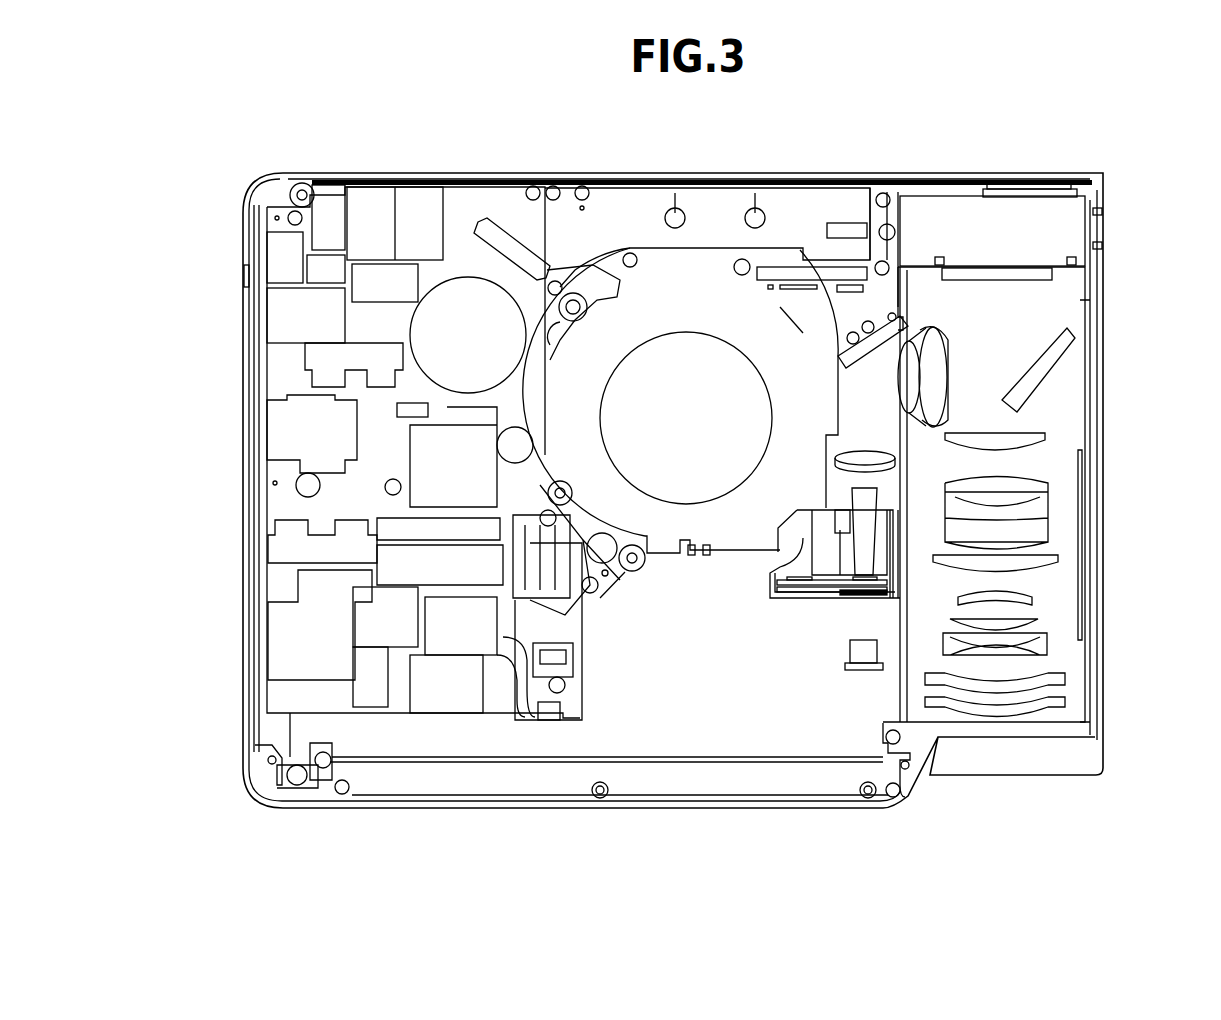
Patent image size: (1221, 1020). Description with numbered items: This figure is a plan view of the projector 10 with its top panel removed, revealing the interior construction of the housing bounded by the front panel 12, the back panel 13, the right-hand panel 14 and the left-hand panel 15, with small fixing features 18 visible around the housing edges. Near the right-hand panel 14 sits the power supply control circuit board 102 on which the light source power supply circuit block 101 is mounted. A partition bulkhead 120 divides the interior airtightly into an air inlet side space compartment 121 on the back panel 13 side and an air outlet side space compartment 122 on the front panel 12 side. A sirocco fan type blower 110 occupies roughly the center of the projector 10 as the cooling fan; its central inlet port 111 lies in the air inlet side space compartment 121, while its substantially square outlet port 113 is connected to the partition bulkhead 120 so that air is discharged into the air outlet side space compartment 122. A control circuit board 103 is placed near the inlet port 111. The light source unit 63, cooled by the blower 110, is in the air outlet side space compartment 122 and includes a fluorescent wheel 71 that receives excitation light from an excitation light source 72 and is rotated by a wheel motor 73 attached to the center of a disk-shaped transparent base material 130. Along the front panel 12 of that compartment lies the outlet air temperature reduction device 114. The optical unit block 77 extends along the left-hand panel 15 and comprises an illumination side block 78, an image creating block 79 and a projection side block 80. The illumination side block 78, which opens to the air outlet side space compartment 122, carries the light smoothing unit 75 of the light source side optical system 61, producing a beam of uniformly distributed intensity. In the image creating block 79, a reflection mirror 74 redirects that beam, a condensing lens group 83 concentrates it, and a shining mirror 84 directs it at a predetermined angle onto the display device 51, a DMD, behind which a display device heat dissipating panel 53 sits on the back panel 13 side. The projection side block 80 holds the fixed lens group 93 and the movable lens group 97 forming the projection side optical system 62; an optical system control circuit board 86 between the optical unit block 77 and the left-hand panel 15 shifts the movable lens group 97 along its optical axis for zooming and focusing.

The projector 10 is at (1116, 176).
The front panel 12 is at (606, 810).
The back panel 13 is at (462, 178).
The right-hand panel 14 is at (250, 536).
The left-hand panel 15 is at (1104, 306).
The fixing member 18 is at (252, 272).
The display device 51 is at (1018, 272).
The display device heat dissipating panel 53 is at (928, 223).
The light source side optical system 61 is at (840, 380).
The projection side optical system 62 is at (1055, 572).
The light source unit 63 is at (840, 630).
The fluorescent wheel 71 is at (825, 591).
The excitation light source 72 is at (863, 655).
The wheel motor 73 is at (818, 565).
The reflection mirror 74 is at (856, 428).
The light smoothing unit 75 is at (866, 550).
The optical unit block 77 is at (1058, 413).
The illumination side block 78 is at (893, 699).
The image creating block 79 is at (911, 290).
The projection side block 80 is at (1052, 624).
The condensing lens group 83 is at (943, 372).
The shining mirror 84 is at (1045, 365).
The optical system control circuit board 86 is at (1094, 437).
The fixed lens group 93 is at (1057, 689).
The movable lens group 97 is at (1040, 510).
The light source power supply circuit block 101 is at (290, 322).
The power supply control circuit board 102 is at (283, 588).
The control circuit board 103 is at (570, 230).
The blower 110 is at (652, 300).
The inlet port 111 is at (697, 365).
The outlet port 113 is at (720, 552).
The outlet air temperature reduction device 114 is at (578, 792).
The partition bulkhead 120 is at (313, 721).
The air inlet side space compartment 121 is at (620, 232).
The air outlet side space compartment 122 is at (540, 740).
The transparent base material 130 is at (800, 600).